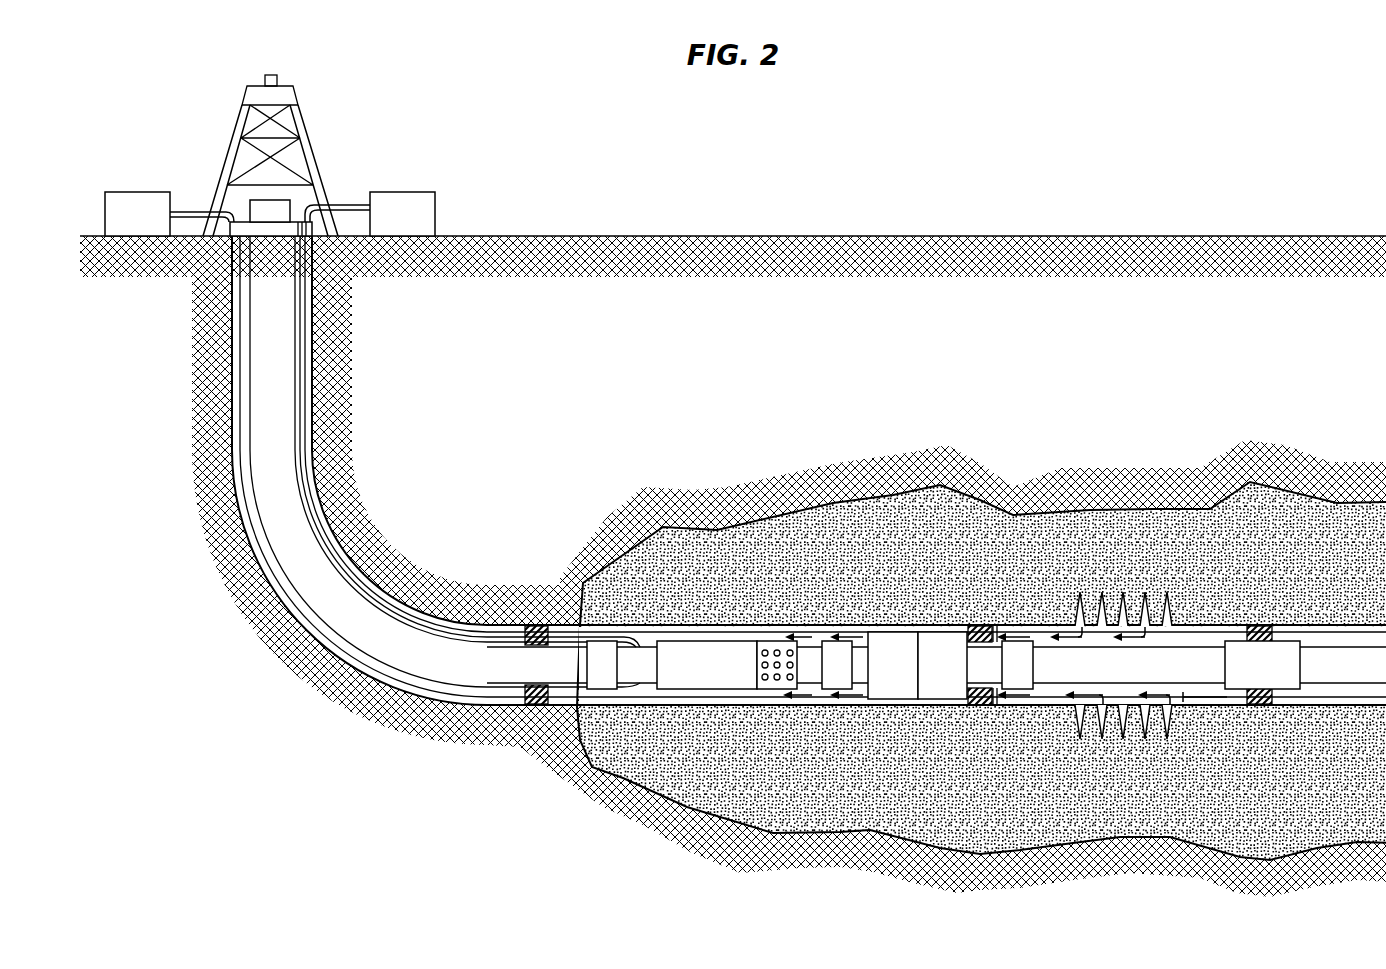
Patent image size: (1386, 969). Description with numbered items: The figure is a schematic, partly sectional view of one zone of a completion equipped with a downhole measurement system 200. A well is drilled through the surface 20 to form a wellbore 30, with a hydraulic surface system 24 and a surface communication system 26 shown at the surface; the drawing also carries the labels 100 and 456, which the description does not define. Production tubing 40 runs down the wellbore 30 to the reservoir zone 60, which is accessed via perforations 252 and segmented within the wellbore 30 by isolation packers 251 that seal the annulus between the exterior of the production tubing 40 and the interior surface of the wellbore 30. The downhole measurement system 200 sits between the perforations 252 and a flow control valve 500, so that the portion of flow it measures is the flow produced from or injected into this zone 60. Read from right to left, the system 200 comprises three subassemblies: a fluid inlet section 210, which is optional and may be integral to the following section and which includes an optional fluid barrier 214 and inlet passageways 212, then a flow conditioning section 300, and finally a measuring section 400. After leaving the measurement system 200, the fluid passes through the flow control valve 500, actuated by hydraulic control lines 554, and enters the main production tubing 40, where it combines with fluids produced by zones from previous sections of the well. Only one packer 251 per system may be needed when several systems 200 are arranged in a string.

The well system 100 is at (368, 150).
The surface 20 is at (961, 236).
The hydraulic surface system 24 is at (392, 225).
The surface communication system 26 is at (124, 225).
The wellbore 30 is at (237, 352).
The production tubing 40 is at (280, 428).
The reservoir zone 60 is at (1117, 805).
The downhole measurement system 200 is at (892, 626).
The fluid inlet section 210 is at (982, 714).
The inlet passageways 212 is at (994, 627).
The fluid barrier 214 is at (978, 627).
The isolation packers 251 is at (538, 626).
The perforations 252 is at (1145, 592).
The flow conditioning section 300 is at (938, 689).
The measuring section 400 is at (888, 689).
The flow path 456 is at (713, 697).
The flow control valve 500 is at (770, 641).
The hydraulic control lines 554 is at (643, 636).